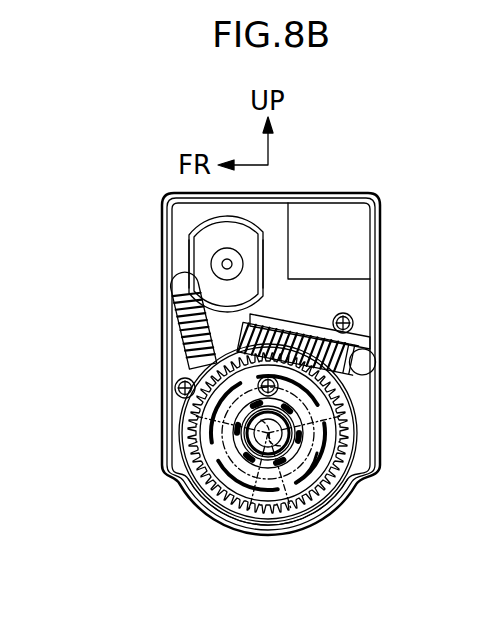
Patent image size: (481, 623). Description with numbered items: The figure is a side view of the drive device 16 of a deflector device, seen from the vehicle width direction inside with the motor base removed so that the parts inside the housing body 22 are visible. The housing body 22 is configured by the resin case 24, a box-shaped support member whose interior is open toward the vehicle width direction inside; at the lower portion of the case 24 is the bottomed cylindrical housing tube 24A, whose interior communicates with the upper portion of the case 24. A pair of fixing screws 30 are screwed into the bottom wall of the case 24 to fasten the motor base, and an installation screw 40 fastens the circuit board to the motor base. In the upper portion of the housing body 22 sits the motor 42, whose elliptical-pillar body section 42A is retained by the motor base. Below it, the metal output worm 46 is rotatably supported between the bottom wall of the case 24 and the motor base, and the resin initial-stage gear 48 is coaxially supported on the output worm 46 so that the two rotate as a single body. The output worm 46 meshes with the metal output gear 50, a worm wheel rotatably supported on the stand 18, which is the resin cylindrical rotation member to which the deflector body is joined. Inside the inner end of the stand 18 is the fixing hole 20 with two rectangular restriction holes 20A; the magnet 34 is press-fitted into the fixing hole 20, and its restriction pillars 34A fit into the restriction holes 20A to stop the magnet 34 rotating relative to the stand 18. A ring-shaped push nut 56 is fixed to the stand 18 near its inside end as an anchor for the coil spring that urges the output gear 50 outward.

The drive device 16 is at (133, 158).
The stand 18 is at (258, 470).
The fixing hole 20 is at (292, 482).
The restriction holes 20A is at (343, 424).
The housing body 22 is at (337, 193).
The case 24 is at (271, 364).
The housing tube 24A is at (207, 510).
The fixing screws 30 is at (180, 383).
The magnet 34 is at (220, 412).
The restriction pillars 34A is at (238, 447).
The installation screw 40 is at (340, 391).
The motor 42 is at (226, 264).
The body section 42A is at (196, 228).
The output worm 46 is at (303, 333).
The initial-stage gear 48 is at (190, 356).
The output gear 50 is at (335, 452).
The push nut 56 is at (345, 495).